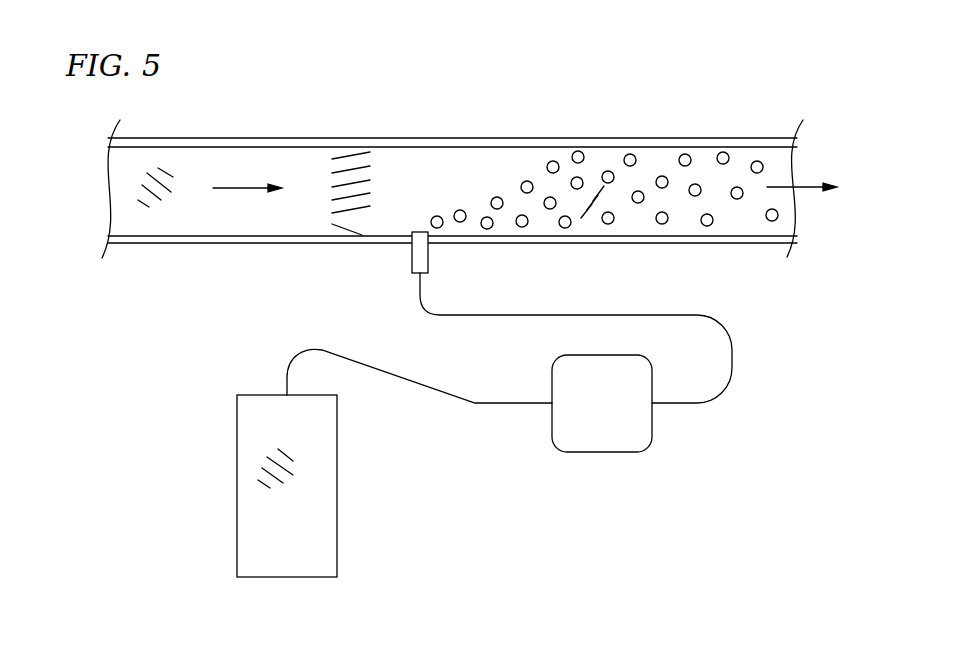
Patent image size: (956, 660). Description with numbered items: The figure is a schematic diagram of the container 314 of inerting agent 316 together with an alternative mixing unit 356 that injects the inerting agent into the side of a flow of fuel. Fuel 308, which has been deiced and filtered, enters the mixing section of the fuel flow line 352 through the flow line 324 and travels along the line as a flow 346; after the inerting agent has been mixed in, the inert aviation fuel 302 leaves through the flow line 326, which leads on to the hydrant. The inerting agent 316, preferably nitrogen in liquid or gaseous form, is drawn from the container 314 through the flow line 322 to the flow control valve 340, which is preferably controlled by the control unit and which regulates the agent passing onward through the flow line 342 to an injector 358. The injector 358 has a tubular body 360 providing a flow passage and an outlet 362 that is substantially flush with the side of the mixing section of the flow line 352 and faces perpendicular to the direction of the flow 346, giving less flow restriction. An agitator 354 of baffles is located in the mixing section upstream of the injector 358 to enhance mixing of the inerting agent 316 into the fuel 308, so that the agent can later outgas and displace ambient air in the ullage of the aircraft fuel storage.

The inert aviation fuel 302 is at (593, 182).
The fuel 308 is at (163, 172).
The container 314 is at (337, 467).
The inerting agent 316 is at (267, 458).
The flow line 322 is at (417, 382).
The flow line 324 is at (110, 163).
The flow line 326 is at (777, 155).
The flow control valve 340 is at (622, 412).
The flow line 342 is at (530, 313).
The flow 346 is at (250, 188).
The fuel flow line 352 is at (500, 143).
The agitator 354 is at (352, 153).
The mixing unit 356 is at (385, 318).
The injector 358 is at (412, 250).
The tubular body 360 is at (428, 253).
The outlet 362 is at (424, 232).